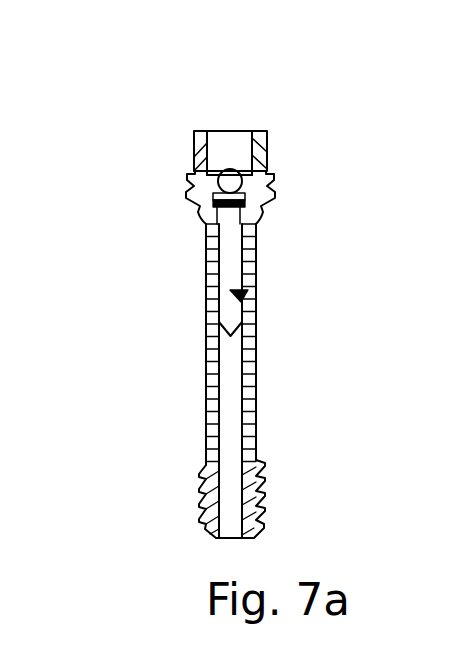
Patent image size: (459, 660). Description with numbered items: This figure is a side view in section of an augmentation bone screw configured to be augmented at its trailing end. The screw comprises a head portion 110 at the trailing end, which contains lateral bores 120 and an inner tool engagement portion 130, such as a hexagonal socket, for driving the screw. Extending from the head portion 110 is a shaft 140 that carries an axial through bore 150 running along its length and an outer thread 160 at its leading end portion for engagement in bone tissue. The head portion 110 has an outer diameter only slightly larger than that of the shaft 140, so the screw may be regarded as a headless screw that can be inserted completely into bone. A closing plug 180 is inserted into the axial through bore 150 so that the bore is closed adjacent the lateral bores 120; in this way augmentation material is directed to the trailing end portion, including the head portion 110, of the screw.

The head portion 110 is at (193, 157).
The lateral bores 120 is at (237, 172).
The inner tool engagement portion 130 is at (218, 148).
The shaft 140 is at (207, 372).
The axial through bore 150 is at (233, 437).
The outer thread 160 is at (200, 497).
The closing plug 180 is at (247, 297).